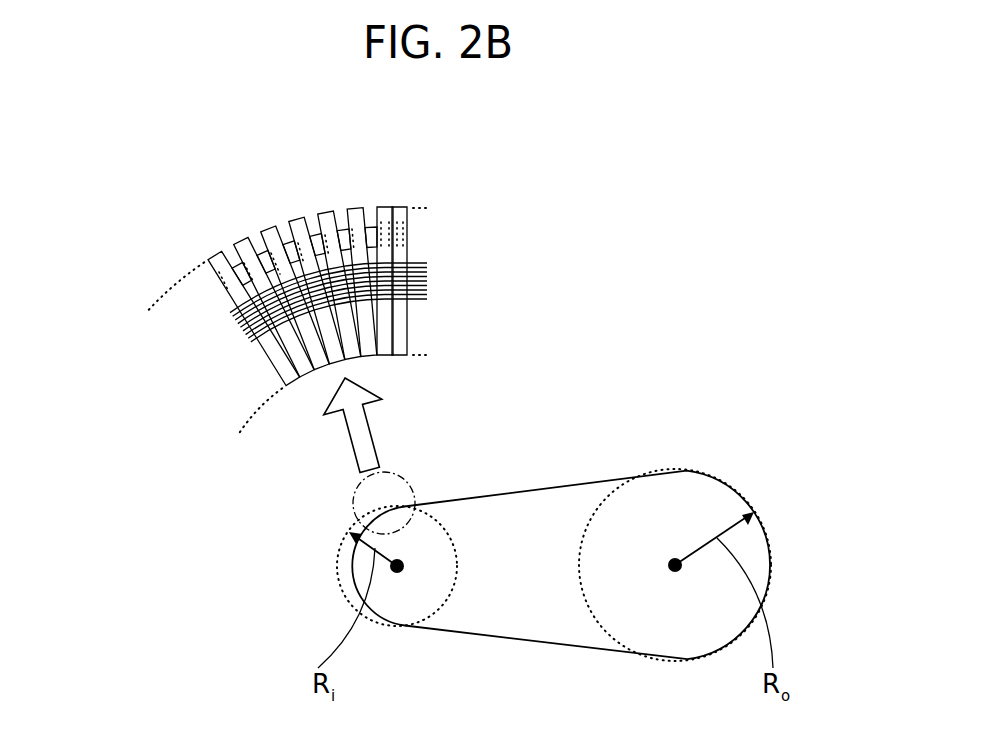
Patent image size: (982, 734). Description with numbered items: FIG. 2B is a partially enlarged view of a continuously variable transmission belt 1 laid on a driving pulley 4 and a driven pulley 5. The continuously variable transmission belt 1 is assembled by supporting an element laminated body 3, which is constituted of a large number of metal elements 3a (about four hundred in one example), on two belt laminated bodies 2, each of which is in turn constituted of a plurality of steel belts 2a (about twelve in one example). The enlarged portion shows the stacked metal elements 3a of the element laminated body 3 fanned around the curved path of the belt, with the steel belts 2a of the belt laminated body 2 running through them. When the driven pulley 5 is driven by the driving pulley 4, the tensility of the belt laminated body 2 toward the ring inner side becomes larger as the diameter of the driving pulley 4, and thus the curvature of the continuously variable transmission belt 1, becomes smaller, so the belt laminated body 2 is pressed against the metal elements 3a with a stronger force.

The continuously variable transmission belt 1 is at (383, 173).
The belt laminated body 2 is at (588, 222).
The steel belt 2a is at (427, 263).
The element laminated body 3 is at (247, 104).
The metal element 3a is at (222, 257).
The driving pulley 4 is at (458, 553).
The driven pulley 5 is at (578, 577).